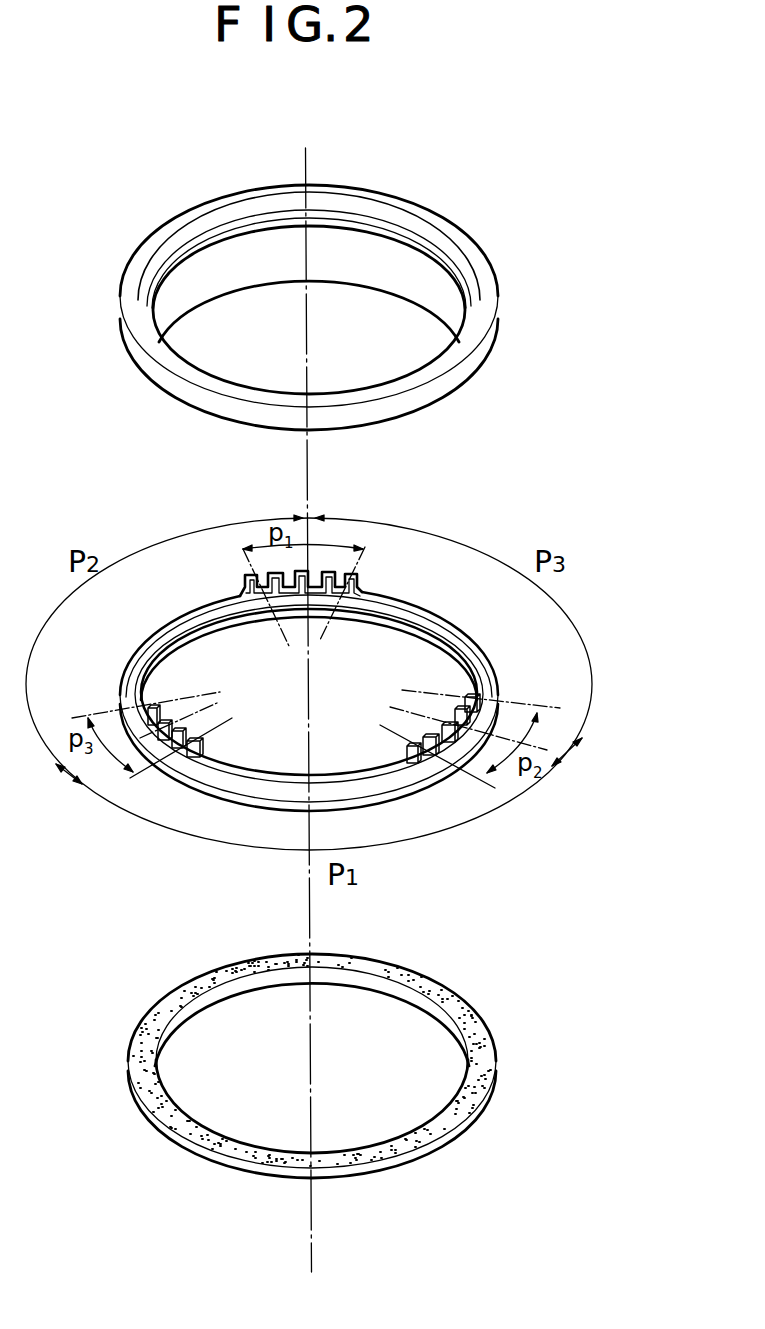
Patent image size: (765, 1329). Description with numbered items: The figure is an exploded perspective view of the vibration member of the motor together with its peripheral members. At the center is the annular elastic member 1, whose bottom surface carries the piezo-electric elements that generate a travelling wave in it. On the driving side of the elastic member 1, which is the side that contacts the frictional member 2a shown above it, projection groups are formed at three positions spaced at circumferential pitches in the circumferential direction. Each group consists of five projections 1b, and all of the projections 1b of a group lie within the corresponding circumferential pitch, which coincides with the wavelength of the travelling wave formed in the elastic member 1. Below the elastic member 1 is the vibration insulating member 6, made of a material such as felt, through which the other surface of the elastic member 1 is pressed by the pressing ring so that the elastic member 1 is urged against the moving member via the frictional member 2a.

The frictional member 2a is at (488, 275).
The annular elastic member 1 is at (488, 666).
The projections 1b is at (330, 585).
The vibration insulating member 6 is at (480, 1017).